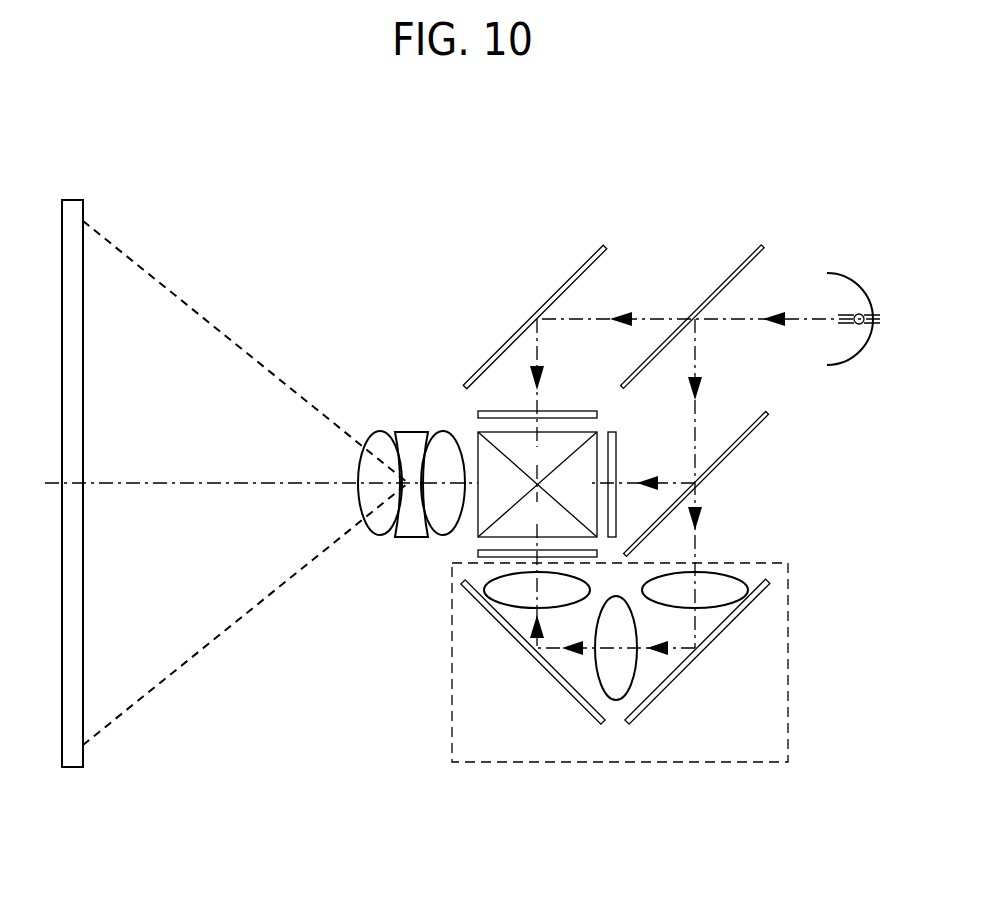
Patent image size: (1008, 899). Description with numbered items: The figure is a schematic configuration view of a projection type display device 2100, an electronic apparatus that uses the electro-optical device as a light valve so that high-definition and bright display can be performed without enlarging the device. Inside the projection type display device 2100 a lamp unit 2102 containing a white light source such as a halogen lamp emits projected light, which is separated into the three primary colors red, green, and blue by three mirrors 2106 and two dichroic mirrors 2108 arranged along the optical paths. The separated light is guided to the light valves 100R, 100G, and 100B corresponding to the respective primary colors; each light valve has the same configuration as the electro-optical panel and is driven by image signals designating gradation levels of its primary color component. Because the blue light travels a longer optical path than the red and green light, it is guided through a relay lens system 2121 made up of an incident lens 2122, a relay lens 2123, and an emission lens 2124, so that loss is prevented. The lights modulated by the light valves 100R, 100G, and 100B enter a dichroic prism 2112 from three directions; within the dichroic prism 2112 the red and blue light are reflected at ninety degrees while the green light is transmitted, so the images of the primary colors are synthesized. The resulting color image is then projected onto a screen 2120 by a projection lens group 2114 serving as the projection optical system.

The projection type display device 2100 is at (634, 211).
The lamp unit 2102 is at (858, 314).
The mirror 2106 is at (575, 278).
The dichroic mirror 2108 is at (733, 277).
The dichroic prism 2112 is at (491, 432).
The projection lens group 2114 is at (463, 418).
The screen 2120 is at (83, 758).
The relay lens system 2121 is at (788, 612).
The incident lens 2122 is at (716, 600).
The relay lens 2123 is at (625, 684).
The emission lens 2124 is at (512, 595).
The light valve 100R is at (514, 411).
The light valve 100G is at (617, 455).
The light valve 100B is at (478, 552).